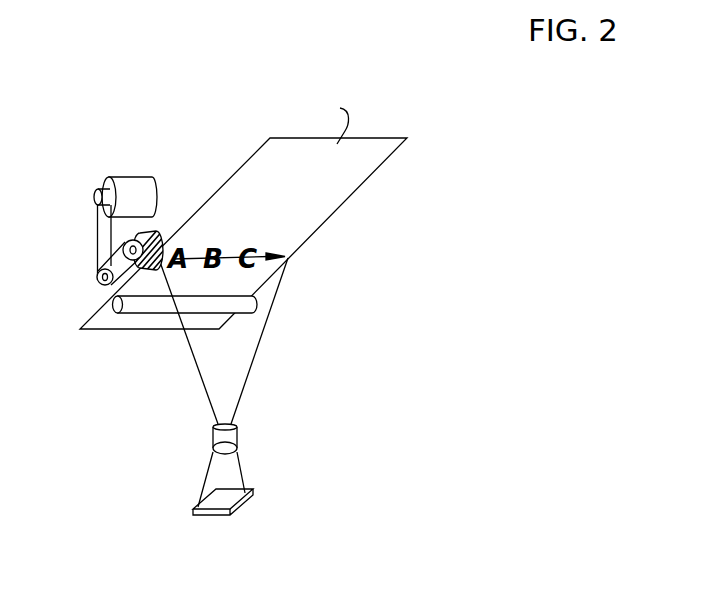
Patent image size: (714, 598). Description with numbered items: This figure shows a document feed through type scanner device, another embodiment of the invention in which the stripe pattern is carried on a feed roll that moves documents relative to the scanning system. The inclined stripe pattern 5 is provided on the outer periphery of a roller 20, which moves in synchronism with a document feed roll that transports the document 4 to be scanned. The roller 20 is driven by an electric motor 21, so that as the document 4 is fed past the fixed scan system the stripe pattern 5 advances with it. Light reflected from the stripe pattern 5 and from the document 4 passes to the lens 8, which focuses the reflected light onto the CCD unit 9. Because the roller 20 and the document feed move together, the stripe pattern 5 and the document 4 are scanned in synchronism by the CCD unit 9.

The document 4 is at (377, 166).
The inclined stripe pattern 5 is at (156, 233).
The lens 8 is at (231, 435).
The CCD unit 9 is at (258, 497).
The roller 20 is at (112, 240).
The electric motor 21 is at (125, 178).